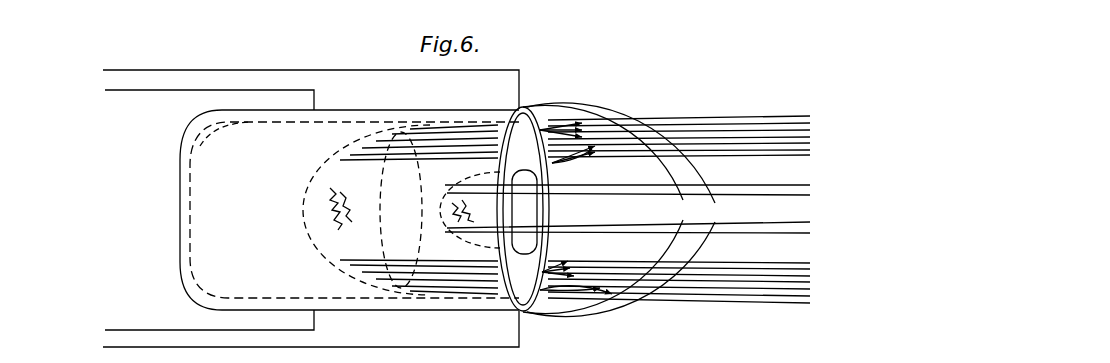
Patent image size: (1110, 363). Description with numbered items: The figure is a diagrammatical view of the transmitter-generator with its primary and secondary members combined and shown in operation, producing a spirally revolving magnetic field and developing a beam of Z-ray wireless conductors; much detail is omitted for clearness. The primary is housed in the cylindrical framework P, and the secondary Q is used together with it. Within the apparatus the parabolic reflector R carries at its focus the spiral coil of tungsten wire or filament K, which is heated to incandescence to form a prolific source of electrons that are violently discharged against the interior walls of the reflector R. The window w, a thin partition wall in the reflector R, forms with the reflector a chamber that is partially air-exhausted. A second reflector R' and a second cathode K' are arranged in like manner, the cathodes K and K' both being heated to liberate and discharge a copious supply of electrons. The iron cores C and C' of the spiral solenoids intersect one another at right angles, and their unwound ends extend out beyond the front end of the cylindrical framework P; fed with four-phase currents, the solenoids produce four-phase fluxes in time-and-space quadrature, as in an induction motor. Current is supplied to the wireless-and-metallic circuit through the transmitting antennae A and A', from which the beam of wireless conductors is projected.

The secondary Q is at (202, 142).
The cylindrical framework P is at (340, 140).
The parabolic reflector R is at (354, 210).
The spiral coil of tungsten wire or filament K is at (331, 209).
The window w is at (381, 208).
The reflector R' is at (461, 210).
The cathode K' is at (471, 211).
The transmitting antennae A is at (576, 212).
The transmitting antennae A' is at (572, 211).
The iron core C is at (603, 209).
The iron core C' is at (631, 210).